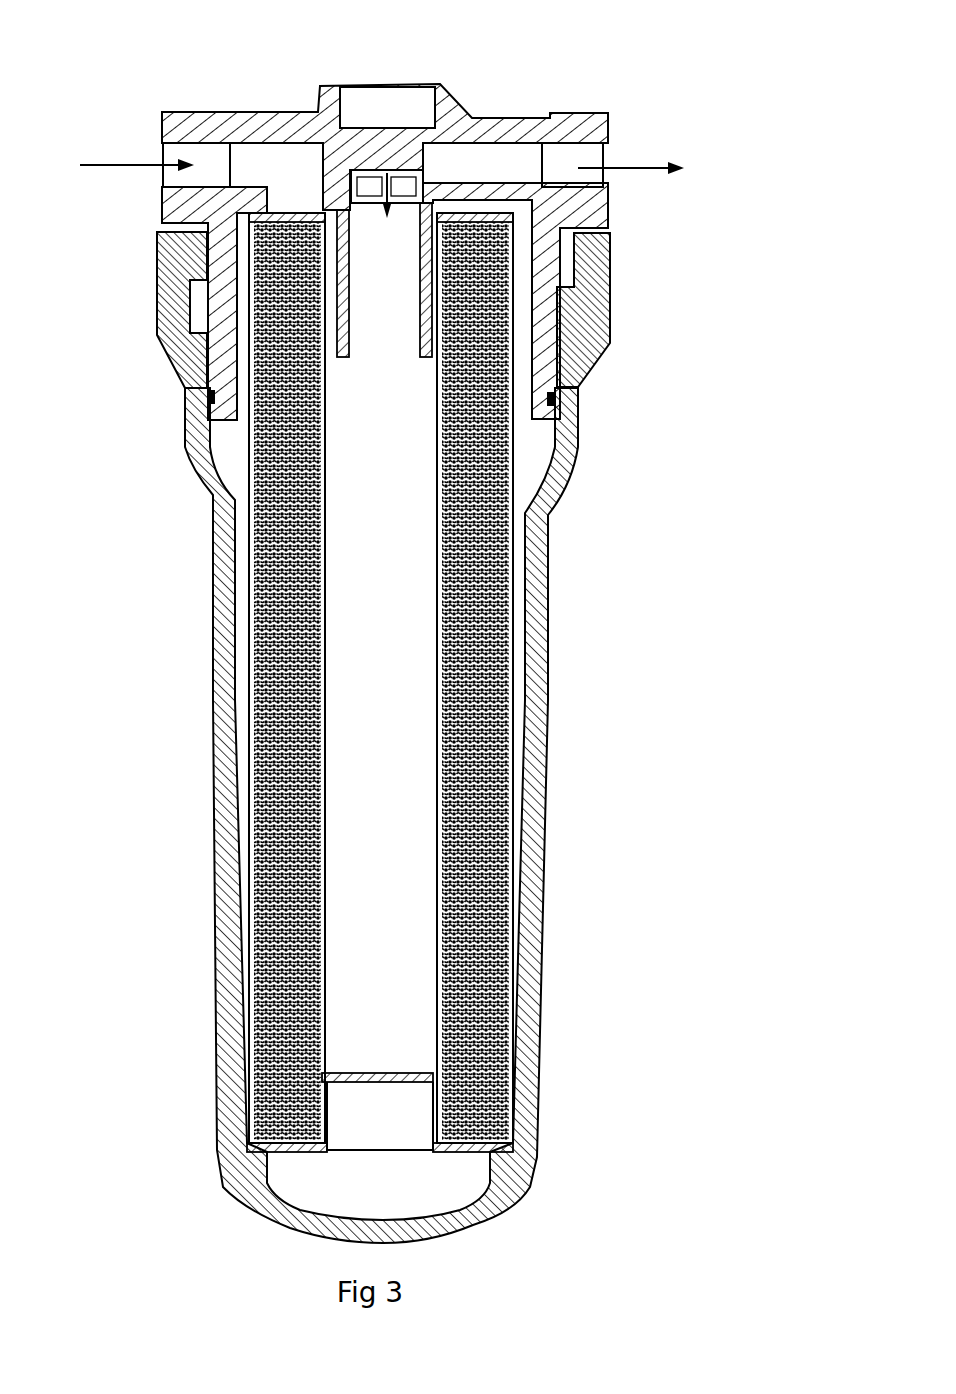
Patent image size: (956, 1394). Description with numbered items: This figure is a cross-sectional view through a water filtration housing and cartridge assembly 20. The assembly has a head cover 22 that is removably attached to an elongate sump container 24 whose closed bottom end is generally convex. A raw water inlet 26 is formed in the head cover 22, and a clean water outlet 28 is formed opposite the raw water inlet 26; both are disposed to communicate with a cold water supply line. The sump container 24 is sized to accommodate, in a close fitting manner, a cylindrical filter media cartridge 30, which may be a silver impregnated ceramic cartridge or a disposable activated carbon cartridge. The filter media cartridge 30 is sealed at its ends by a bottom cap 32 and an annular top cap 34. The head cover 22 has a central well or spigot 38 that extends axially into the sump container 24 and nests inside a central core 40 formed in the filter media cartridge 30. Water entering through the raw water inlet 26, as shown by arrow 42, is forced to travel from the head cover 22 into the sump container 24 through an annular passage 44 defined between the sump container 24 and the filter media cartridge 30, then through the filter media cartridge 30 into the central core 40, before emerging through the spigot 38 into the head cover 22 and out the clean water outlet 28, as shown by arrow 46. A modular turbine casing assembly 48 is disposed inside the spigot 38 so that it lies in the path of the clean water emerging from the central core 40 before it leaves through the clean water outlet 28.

The water filtration housing and cartridge assembly 20 is at (304, 68).
The head cover 22 is at (477, 112).
The sump container 24 is at (607, 347).
The raw water inlet 26 is at (165, 157).
The clean water outlet 28 is at (612, 153).
The filter media cartridge 30 is at (510, 773).
The bottom cap 32 is at (343, 1082).
The annular top cap 34 is at (285, 213).
The spigot 38 is at (417, 341).
The central core 40 is at (440, 610).
The arrow 42 is at (97, 167).
The annular passage 44 is at (240, 573).
The arrow 46 is at (650, 177).
The modular turbine casing assembly 48 is at (372, 176).